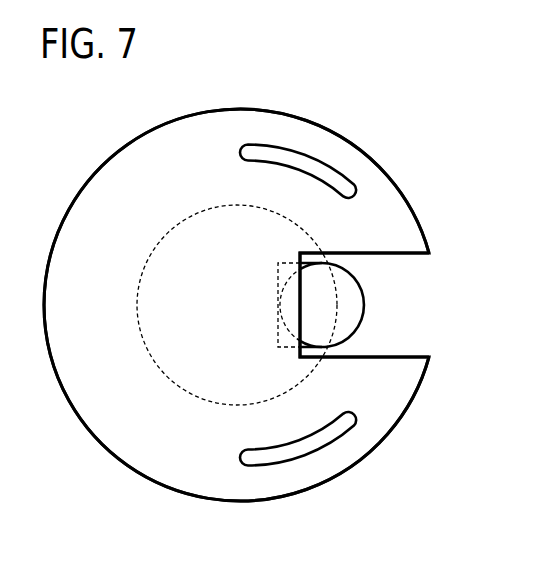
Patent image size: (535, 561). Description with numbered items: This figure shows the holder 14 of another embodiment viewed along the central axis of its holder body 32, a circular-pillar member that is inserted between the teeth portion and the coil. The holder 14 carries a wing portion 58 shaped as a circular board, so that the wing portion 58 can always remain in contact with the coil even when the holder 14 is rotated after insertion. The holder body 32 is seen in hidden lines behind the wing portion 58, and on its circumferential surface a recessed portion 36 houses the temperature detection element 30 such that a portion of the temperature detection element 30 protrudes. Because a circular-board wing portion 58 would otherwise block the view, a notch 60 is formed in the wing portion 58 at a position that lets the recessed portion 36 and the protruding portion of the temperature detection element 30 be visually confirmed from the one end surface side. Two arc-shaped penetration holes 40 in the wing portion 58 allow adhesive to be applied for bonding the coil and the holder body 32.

The holder 14 is at (411, 128).
The wing portion 58 is at (97, 202).
The notch 60 is at (433, 283).
The penetration hole 40 is at (296, 158).
The temperature detection element 30 is at (357, 299).
The recessed portion 36 is at (284, 286).
The holder body 32 is at (308, 370).